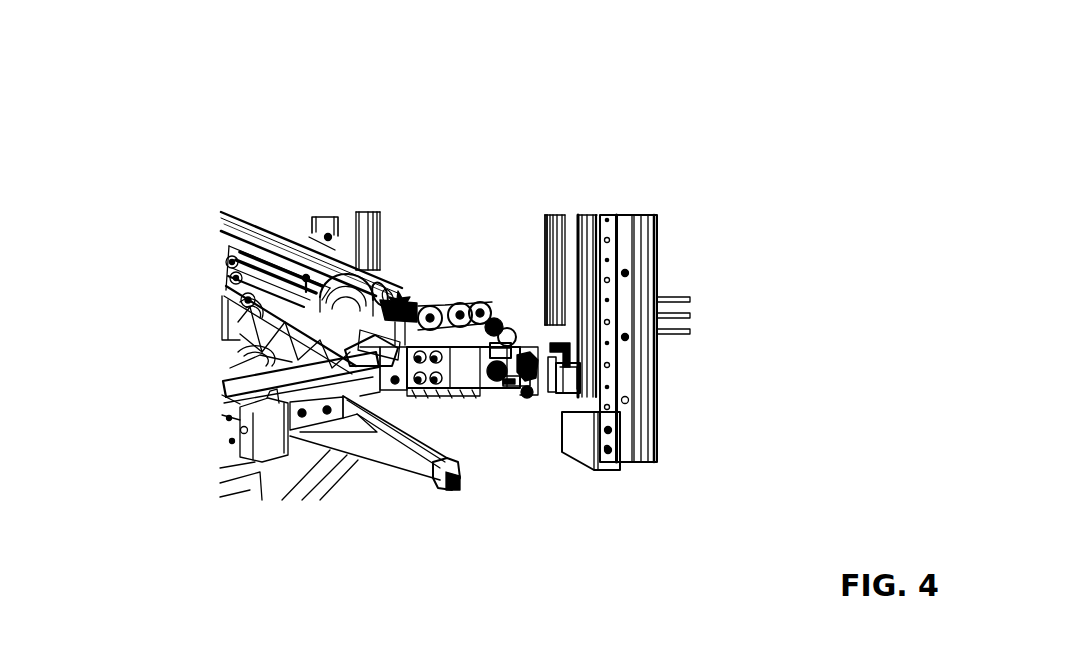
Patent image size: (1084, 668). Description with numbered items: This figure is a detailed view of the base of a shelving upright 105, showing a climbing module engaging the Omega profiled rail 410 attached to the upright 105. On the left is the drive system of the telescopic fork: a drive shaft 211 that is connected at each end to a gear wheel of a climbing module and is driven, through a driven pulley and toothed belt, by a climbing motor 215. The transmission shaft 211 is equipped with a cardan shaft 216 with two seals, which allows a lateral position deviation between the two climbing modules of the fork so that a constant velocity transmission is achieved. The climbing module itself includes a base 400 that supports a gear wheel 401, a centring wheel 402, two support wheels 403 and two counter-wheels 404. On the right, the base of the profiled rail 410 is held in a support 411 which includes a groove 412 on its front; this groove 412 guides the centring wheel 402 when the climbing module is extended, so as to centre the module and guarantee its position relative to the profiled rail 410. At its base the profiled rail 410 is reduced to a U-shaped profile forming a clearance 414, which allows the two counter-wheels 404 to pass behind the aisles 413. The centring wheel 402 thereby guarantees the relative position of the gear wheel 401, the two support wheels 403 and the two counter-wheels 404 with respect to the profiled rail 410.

The upright 105 is at (628, 222).
The drive shaft 211 is at (291, 232).
The climbing motor 215 is at (288, 262).
The cardan shaft 216 is at (400, 284).
The base 400 is at (463, 370).
The gear wheel 401 is at (484, 396).
The centring wheel 402 is at (517, 393).
The support wheels 403 is at (506, 312).
The counter-wheels 404 is at (523, 353).
The profiled rail 410 is at (572, 263).
The support 411 is at (580, 373).
The groove 412 is at (560, 390).
The aisles 413 is at (543, 228).
The clearance 414 is at (517, 340).